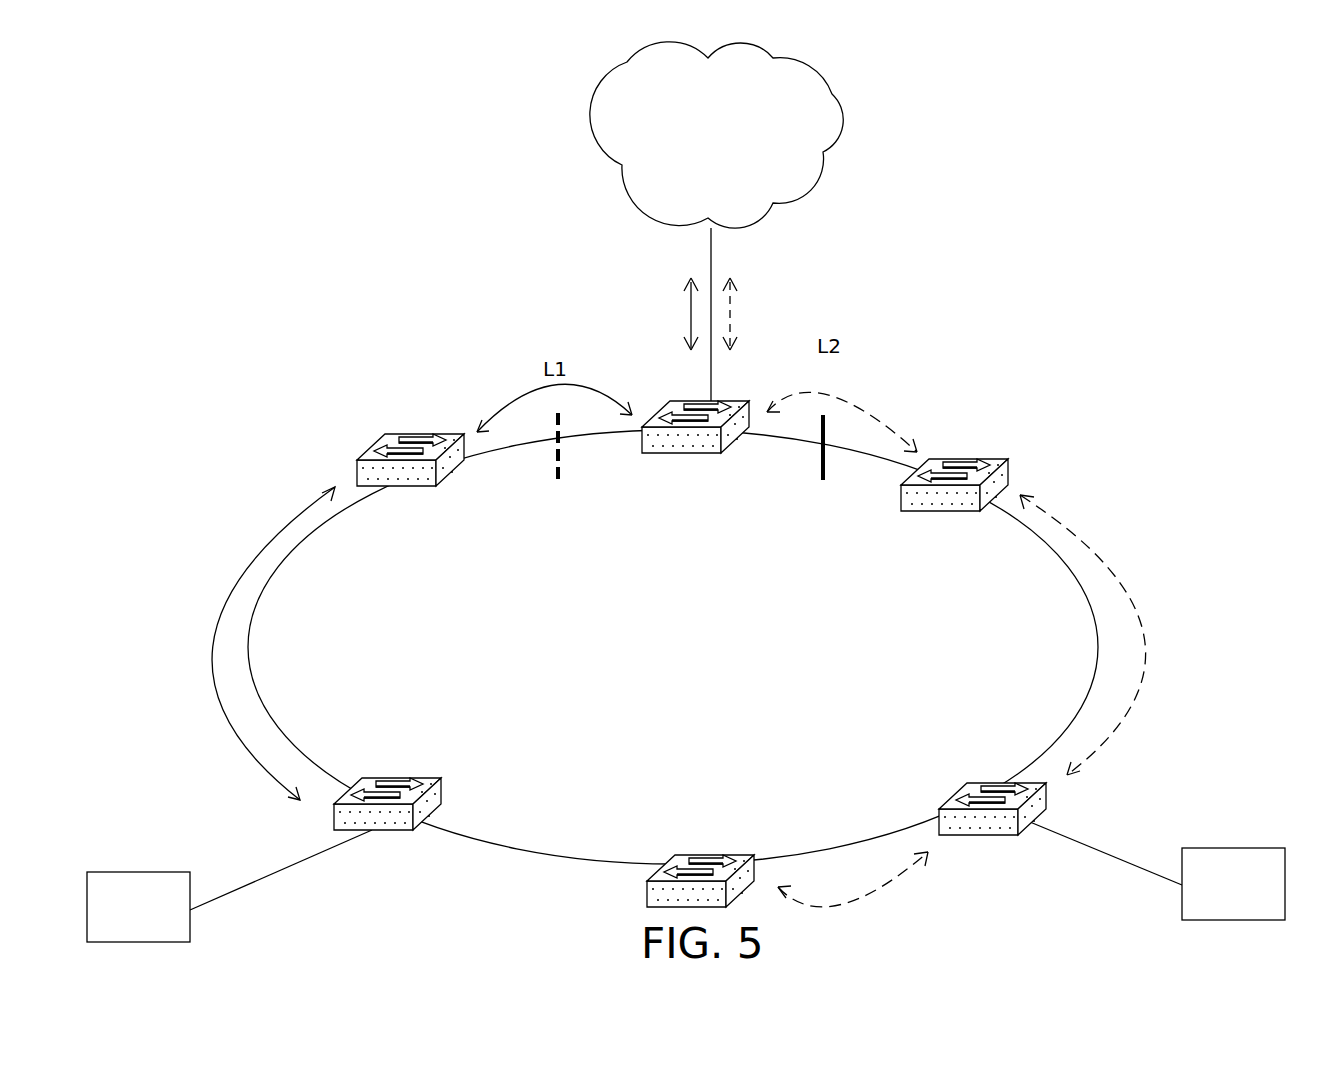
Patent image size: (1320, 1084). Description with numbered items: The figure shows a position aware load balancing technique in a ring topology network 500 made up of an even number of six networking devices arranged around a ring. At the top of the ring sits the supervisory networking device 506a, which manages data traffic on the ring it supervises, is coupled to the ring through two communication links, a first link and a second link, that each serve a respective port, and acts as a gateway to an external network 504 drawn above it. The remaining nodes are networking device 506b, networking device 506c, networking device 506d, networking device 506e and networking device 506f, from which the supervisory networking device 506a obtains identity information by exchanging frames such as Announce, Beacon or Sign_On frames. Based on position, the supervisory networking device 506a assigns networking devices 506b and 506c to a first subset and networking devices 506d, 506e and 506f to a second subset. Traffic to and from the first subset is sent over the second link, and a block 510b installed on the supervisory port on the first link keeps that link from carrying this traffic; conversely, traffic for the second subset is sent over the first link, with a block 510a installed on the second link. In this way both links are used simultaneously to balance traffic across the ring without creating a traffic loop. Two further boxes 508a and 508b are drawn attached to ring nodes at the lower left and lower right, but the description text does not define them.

The ring topology network 500 is at (1238, 118).
The external network 504 is at (700, 174).
The supervisory networking device 506a is at (695, 402).
The networking device 506b is at (417, 433).
The networking device 506c is at (410, 777).
The networking device 506d is at (727, 853).
The networking device 506e is at (950, 837).
The networking device 506f is at (980, 460).
The host device 508a is at (113, 917).
The host device 508b is at (1208, 897).
The block 510a is at (557, 465).
The block 510b is at (822, 467).